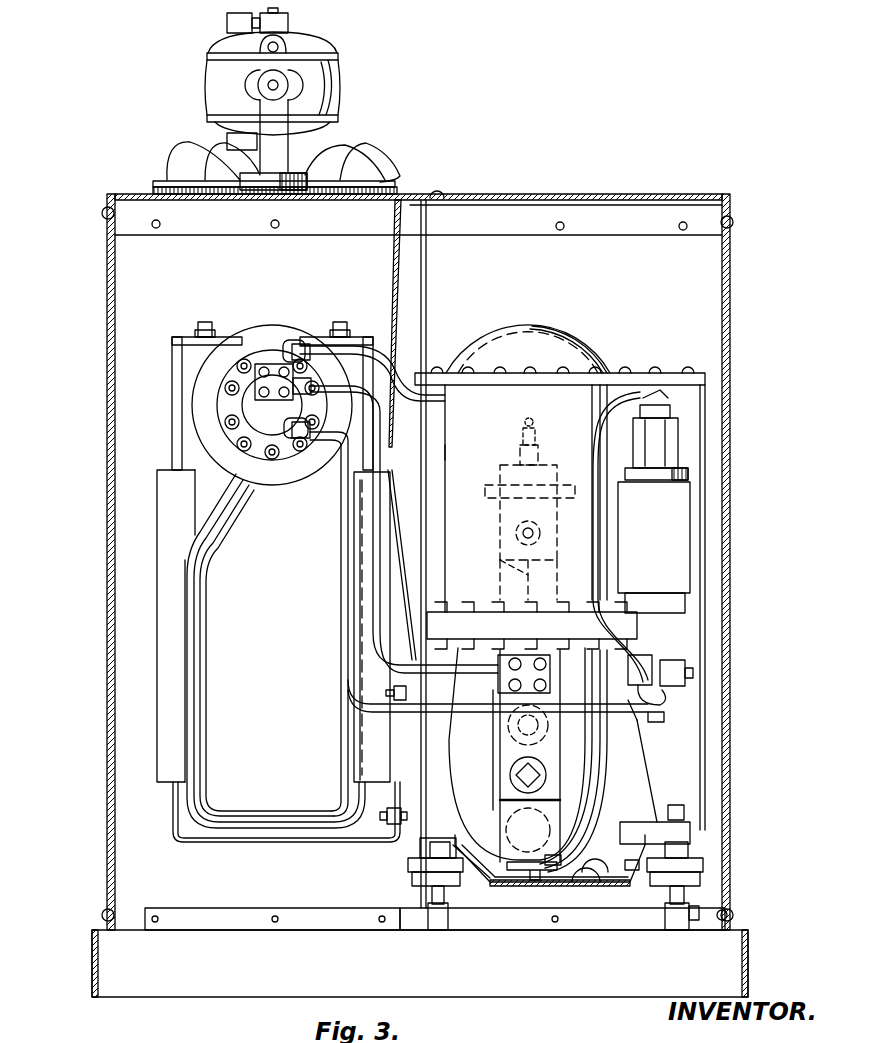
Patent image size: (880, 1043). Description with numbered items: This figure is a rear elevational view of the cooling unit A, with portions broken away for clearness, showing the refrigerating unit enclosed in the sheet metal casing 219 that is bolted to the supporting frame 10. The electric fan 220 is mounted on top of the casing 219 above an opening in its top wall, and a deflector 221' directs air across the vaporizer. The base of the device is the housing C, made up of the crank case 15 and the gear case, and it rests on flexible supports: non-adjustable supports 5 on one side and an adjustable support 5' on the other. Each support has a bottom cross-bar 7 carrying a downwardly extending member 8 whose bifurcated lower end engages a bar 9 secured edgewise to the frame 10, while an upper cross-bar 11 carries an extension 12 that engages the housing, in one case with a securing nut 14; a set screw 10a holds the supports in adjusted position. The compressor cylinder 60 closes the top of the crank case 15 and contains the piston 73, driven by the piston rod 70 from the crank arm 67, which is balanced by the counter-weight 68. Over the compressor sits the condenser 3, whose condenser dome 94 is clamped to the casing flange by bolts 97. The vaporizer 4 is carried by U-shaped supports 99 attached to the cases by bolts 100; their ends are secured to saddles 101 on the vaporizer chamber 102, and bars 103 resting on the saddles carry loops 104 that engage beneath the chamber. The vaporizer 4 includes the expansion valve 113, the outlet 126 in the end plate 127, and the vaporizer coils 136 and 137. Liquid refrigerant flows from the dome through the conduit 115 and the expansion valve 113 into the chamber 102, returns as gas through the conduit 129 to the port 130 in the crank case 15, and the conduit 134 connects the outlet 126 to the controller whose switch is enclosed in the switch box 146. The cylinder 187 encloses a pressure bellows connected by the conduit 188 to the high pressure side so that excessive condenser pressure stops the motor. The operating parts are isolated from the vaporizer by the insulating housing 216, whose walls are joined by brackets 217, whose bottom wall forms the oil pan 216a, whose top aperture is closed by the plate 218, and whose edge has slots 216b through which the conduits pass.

The electric fan 220 is at (328, 79).
The cooling unit A is at (410, 212).
The deflector 221' is at (275, 221).
The sheet metal casing 219 is at (108, 770).
The supporting frame 10 is at (420, 963).
The set screw 10a is at (730, 914).
The bar 9 is at (520, 922).
The loops 104 is at (172, 350).
The bars 103 is at (200, 335).
The conduit 134 is at (346, 334).
The vaporizer coil 137 is at (157, 490).
The vaporizer 4 is at (218, 410).
The saddles 101 is at (282, 310).
The outlet 126 is at (215, 380).
The end plate 127 is at (235, 413).
The vaporizer chamber 102 is at (245, 342).
The expansion valve 113 is at (258, 455).
The vaporizer coil 136 is at (200, 575).
The conduit 115 is at (342, 632).
The conduit 129 is at (378, 462).
The slots 216b is at (432, 410).
The bolts 100 is at (394, 693).
The U-shaped supports 99 is at (208, 838).
The housing 216 is at (422, 786).
The plate 218 is at (534, 330).
The brackets 217 is at (690, 373).
The downwardly extending member 8 is at (448, 890).
The piston 73 is at (558, 528).
The condenser 3 is at (546, 427).
The cylinder 60 is at (556, 577).
The piston rod 70 is at (510, 562).
The bolts 97 is at (490, 608).
The condenser dome 94 is at (428, 455).
The housing C is at (508, 765).
The crank arm 67 is at (508, 748).
The counter-weight 68 is at (560, 833).
The port 130 is at (498, 680).
The extension 12 is at (440, 848).
The cylinder 187 is at (662, 428).
The switch box 146 is at (668, 518).
The conduit 188 is at (640, 640).
The crank case 15 is at (608, 755).
The securing nut 14 is at (680, 822).
The upper cross-bar 11 is at (420, 862).
The non-adjustable support 5 is at (567, 861).
The bottom cross-bar 7 is at (425, 882).
The adjustable support 5' is at (603, 924).
The oil pan 216a is at (597, 885).